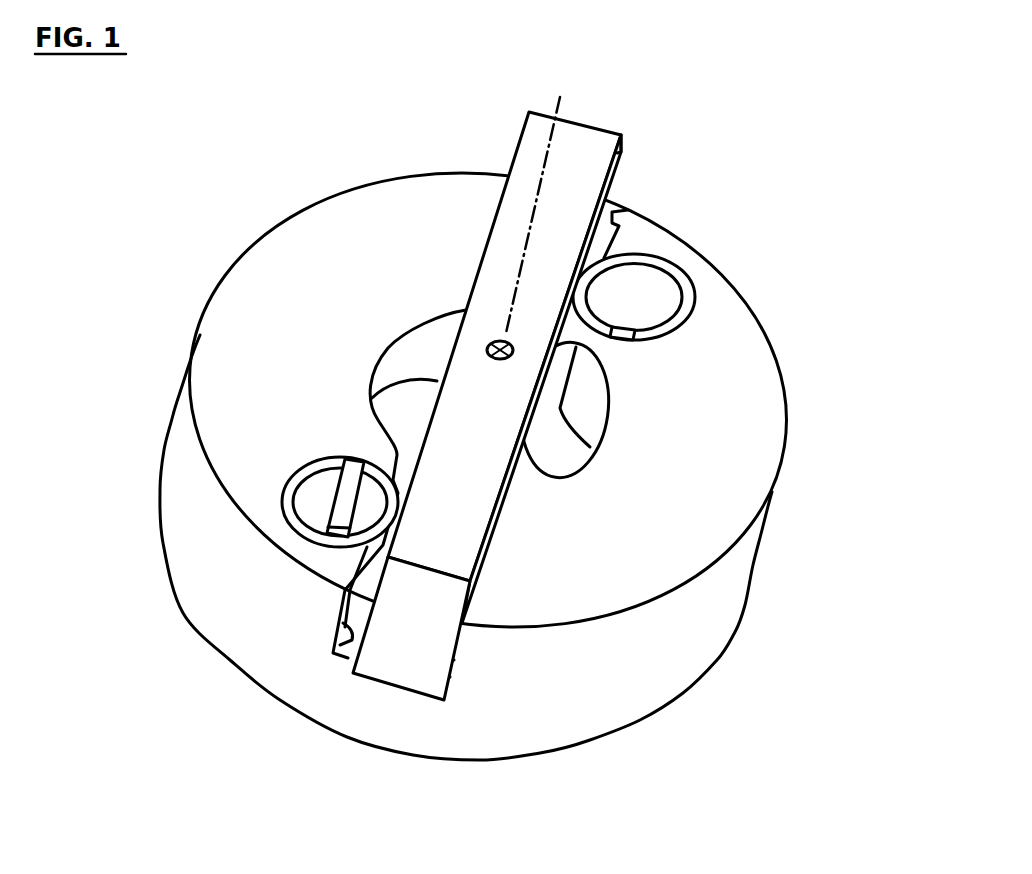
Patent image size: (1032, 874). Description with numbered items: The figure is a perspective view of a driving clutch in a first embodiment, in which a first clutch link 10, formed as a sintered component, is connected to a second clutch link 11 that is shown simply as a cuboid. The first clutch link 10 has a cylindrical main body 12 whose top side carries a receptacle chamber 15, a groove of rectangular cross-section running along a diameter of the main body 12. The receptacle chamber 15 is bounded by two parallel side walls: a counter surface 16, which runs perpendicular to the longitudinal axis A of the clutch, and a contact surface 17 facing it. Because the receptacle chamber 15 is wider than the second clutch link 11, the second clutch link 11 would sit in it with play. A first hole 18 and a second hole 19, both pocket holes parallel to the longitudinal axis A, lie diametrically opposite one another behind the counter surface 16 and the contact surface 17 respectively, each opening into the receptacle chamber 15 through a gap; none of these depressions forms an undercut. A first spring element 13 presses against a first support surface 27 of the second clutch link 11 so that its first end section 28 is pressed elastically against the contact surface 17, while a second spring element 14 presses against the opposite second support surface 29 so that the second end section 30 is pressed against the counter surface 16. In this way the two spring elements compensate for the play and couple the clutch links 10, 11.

The first clutch link 10 is at (262, 237).
The second clutch link 11 is at (522, 128).
The main body 12 is at (346, 193).
The first spring element 13 is at (283, 506).
The second spring element 14 is at (673, 268).
The receptacle chamber 15 is at (348, 660).
The counter surface 16 is at (337, 640).
The contact surface 17 is at (616, 208).
The first hole 18 is at (352, 457).
The second hole 19 is at (620, 333).
The first support surface 27 is at (434, 413).
The first end section 28 is at (364, 680).
The second support surface 29 is at (540, 447).
The second end section 30 is at (622, 150).
The longitudinal axis A is at (556, 142).